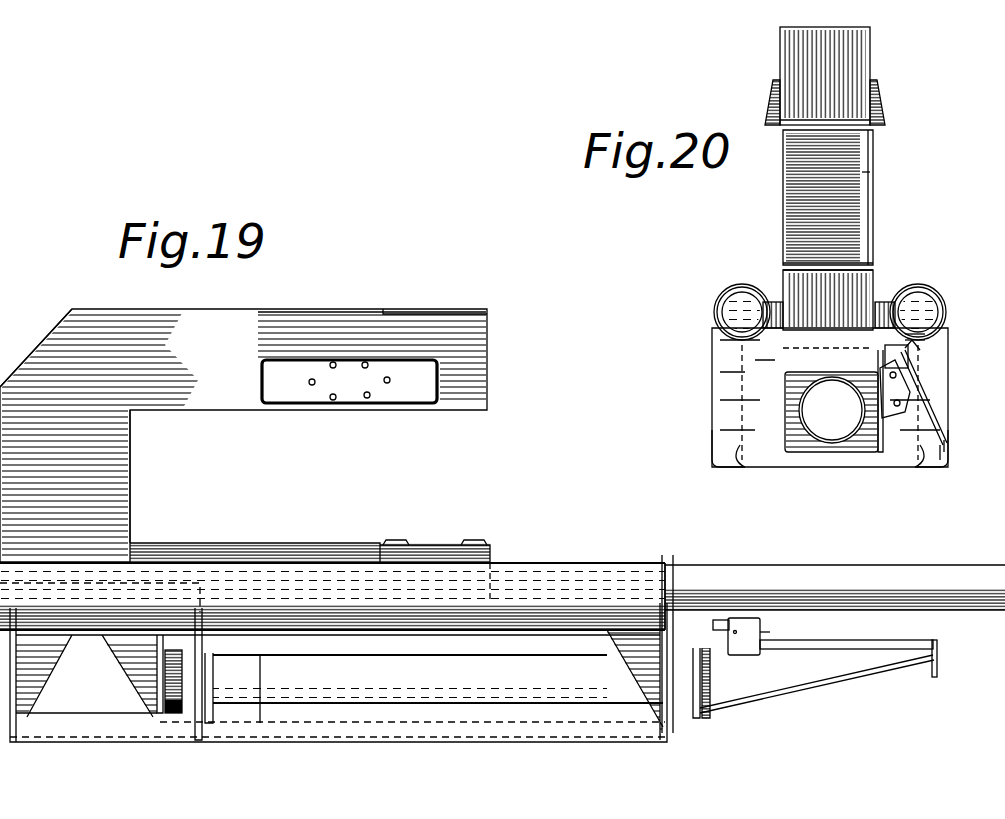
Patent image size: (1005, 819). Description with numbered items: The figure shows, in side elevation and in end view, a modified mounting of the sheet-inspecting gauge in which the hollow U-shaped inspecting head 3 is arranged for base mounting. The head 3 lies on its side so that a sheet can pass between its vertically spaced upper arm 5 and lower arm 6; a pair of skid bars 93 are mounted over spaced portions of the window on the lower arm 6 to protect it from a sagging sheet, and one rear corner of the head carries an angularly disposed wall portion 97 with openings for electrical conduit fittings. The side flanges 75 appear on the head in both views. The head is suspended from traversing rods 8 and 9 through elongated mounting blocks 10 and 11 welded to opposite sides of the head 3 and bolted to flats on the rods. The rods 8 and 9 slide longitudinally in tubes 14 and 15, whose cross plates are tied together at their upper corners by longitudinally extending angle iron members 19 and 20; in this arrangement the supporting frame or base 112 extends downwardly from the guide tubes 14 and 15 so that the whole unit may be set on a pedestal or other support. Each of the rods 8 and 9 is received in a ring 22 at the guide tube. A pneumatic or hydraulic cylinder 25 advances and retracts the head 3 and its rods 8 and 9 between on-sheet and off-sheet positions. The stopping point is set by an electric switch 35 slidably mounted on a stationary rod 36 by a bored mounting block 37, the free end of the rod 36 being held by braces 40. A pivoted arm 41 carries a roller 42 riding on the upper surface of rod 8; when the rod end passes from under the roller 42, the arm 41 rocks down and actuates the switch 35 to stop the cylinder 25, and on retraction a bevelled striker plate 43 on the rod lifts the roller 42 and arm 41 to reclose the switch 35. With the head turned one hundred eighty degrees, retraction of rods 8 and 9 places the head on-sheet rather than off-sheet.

In FIG. 19, the U-shaped inspecting head 3 is at (106, 306).
In FIG. 20, the U-shaped inspecting head 3 is at (873, 53).
In FIG. 19, the upper arm 5 is at (283, 312).
In FIG. 20, the upper arm 5 is at (832, 91).
In FIG. 19, the angularly disposed wall portion 97 is at (45, 340).
In FIG. 19, the slot guide 75 is at (312, 400).
In FIG. 20, the slot guide 75 is at (767, 108).
In FIG. 19, the mounting block 11 is at (464, 466).
In FIG. 20, the mounting block 11 is at (862, 176).
In FIG. 19, the mounting block 10 is at (105, 585).
In FIG. 20, the mounting block 10 is at (770, 300).
In FIG. 19, the lower arm 6 is at (282, 546).
In FIG. 20, the lower arm 6 is at (828, 309).
In FIG. 19, the skid bars 93 is at (397, 540).
In FIG. 20, the skid bars 93 is at (855, 260).
In FIG. 19, the tube 14 is at (600, 562).
In FIG. 20, the tube 14 is at (732, 288).
In FIG. 19, the traversing rod 8 is at (841, 574).
In FIG. 20, the traversing rod 8 is at (730, 310).
In FIG. 19, the angle iron member 19 is at (490, 737).
In FIG. 20, the angle iron member 19 is at (720, 467).
In FIG. 19, the supporting frame or base 112 is at (320, 742).
In FIG. 20, the supporting frame or base 112 is at (785, 467).
In FIG. 19, the cylinder 25 is at (436, 670).
In FIG. 20, the cylinder 25 is at (845, 432).
In FIG. 19, the roller 42 is at (733, 617).
In FIG. 20, the roller 42 is at (926, 355).
In FIG. 19, the electric switch 35 is at (713, 626).
In FIG. 20, the electric switch 35 is at (885, 360).
In FIG. 19, the stationary rod 36 is at (855, 650).
In FIG. 19, the mounting block 37 is at (738, 655).
In FIG. 19, the braces 40 is at (830, 690).
In FIG. 20, the braces 40 is at (885, 455).
In FIG. 20, the ring 22 is at (718, 315).
In FIG. 20, the traversing rod 9 is at (938, 303).
In FIG. 20, the tube 15 is at (926, 290).
In FIG. 20, the pivoted arm 41 is at (918, 350).
In FIG. 20, the bevelled striker plate 43 is at (922, 344).
In FIG. 20, the angle iron member 20 is at (928, 468).